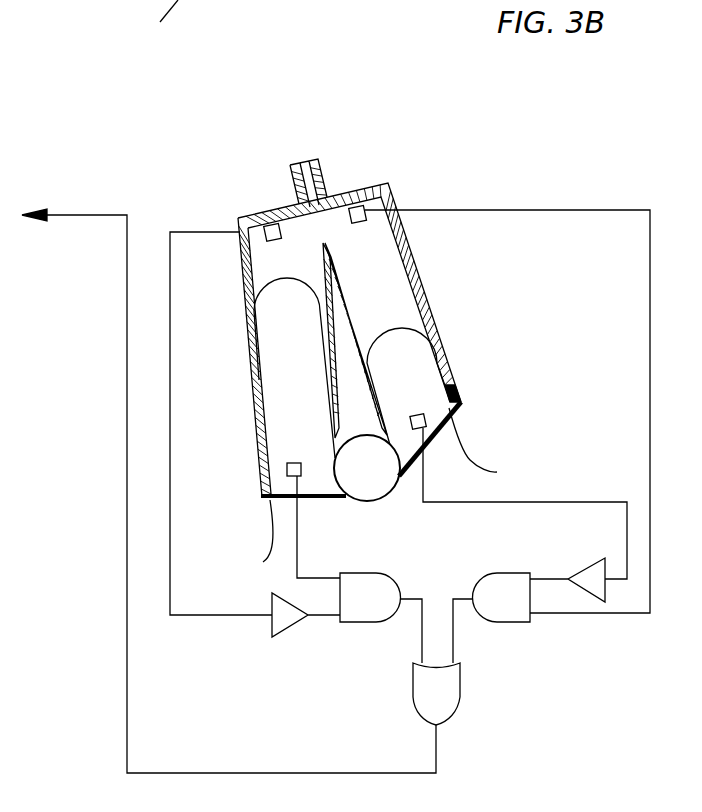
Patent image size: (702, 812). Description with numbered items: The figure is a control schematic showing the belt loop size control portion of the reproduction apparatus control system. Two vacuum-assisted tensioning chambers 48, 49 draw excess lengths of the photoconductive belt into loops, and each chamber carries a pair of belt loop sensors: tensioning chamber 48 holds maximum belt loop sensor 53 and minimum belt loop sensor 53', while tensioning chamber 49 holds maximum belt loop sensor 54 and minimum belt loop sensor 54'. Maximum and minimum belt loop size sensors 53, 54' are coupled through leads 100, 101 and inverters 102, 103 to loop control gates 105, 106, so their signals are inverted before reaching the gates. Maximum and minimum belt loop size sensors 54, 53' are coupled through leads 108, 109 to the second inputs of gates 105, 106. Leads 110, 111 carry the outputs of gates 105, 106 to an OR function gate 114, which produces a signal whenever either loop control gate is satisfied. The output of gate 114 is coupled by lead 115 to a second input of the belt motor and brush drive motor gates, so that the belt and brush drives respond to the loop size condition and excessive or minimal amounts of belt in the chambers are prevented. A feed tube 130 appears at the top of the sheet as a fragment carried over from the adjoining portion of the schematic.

The tensioning chamber 48 is at (280, 352).
The tensioning chamber 49 is at (397, 310).
The maximum belt loop sensor 53 is at (279, 248).
The maximum belt loop sensor 54 is at (363, 233).
The minimum belt loop sensor 53' is at (292, 449).
The minimum belt loop sensor 54' is at (409, 407).
The lead 100 is at (170, 305).
The lead 101 is at (520, 502).
The inverter 102 is at (275, 637).
The inverter 103 is at (590, 558).
The loop control gate 105 is at (388, 577).
The loop control gate 106 is at (530, 622).
The lead 108 is at (570, 182).
The lead 109 is at (298, 560).
The lead 110 is at (410, 598).
The lead 111 is at (453, 646).
The OR function gate 114 is at (455, 707).
The lead 115 is at (125, 358).
The feed tube 130 is at (118, 3).